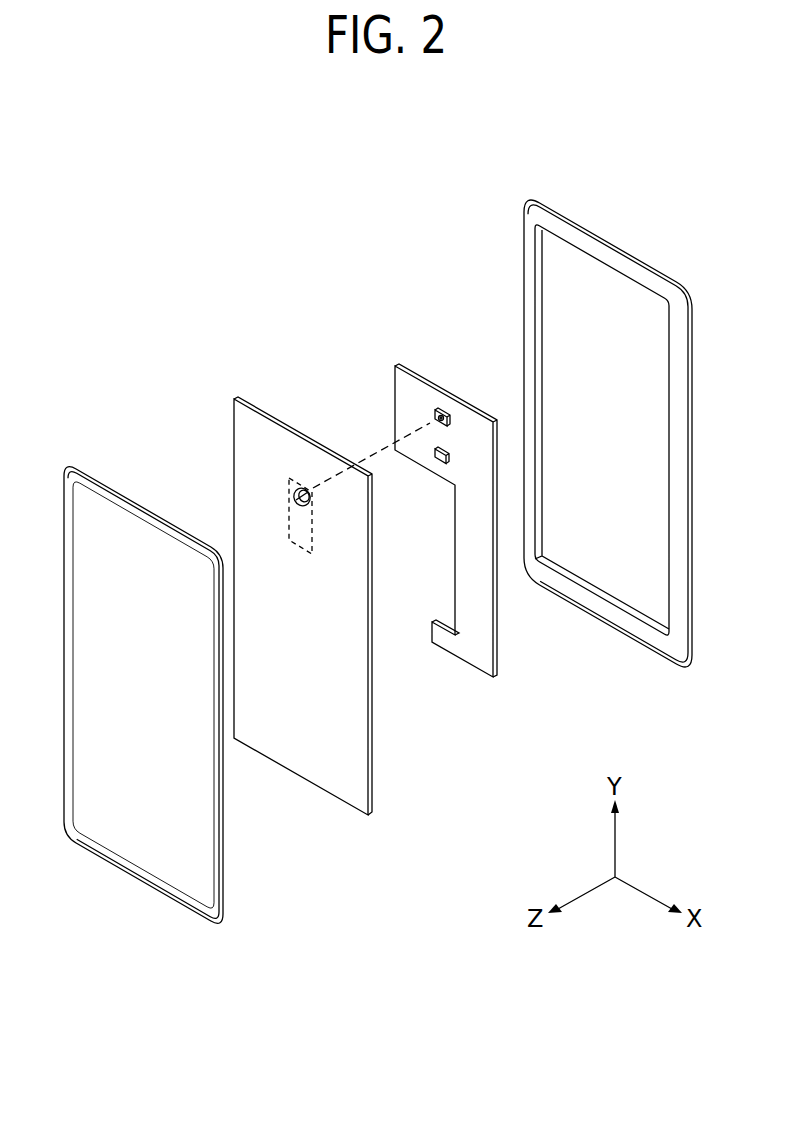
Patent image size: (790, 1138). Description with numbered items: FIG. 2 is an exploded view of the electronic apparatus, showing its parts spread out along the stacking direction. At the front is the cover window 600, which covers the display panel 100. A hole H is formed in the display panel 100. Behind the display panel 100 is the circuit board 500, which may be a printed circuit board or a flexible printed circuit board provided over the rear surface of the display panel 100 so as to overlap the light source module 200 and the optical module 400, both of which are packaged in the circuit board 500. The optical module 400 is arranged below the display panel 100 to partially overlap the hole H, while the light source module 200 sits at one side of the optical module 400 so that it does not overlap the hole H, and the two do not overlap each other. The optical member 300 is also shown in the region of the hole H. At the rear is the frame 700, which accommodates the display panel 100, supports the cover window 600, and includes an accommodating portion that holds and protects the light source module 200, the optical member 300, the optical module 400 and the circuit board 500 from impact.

The display panel 100 is at (243, 399).
The light source module 200 is at (437, 459).
The optical member 300 is at (288, 508).
The optical module 400 is at (440, 410).
The circuit board 500 is at (413, 373).
The cover window 600 is at (80, 483).
The frame 700 is at (613, 248).
The hole H is at (303, 478).